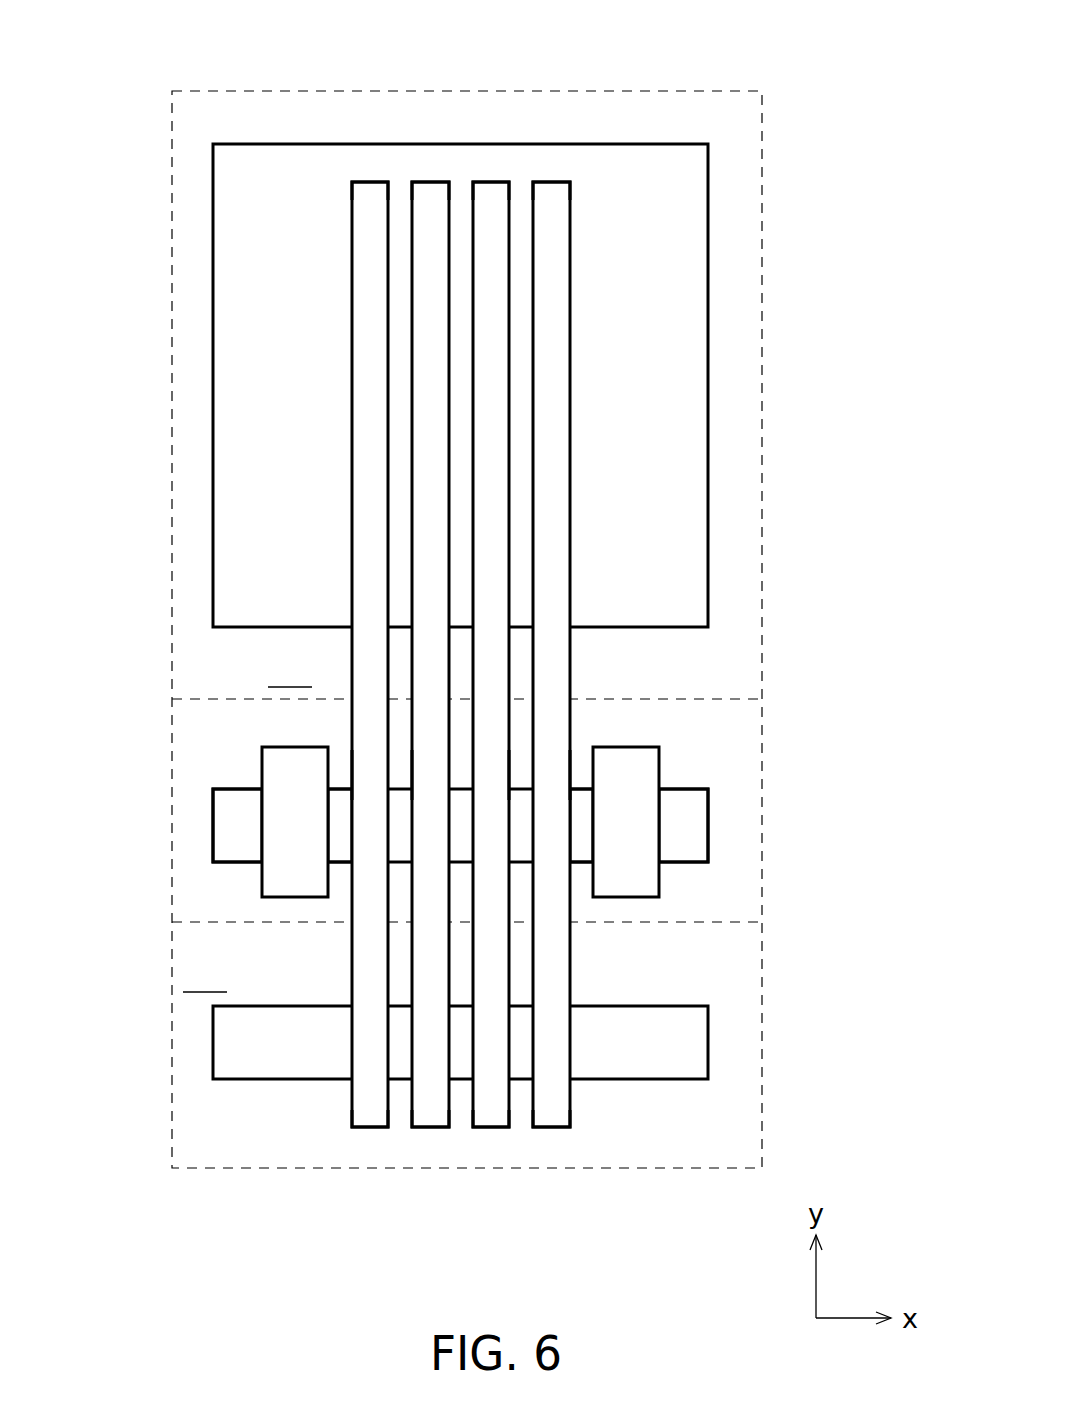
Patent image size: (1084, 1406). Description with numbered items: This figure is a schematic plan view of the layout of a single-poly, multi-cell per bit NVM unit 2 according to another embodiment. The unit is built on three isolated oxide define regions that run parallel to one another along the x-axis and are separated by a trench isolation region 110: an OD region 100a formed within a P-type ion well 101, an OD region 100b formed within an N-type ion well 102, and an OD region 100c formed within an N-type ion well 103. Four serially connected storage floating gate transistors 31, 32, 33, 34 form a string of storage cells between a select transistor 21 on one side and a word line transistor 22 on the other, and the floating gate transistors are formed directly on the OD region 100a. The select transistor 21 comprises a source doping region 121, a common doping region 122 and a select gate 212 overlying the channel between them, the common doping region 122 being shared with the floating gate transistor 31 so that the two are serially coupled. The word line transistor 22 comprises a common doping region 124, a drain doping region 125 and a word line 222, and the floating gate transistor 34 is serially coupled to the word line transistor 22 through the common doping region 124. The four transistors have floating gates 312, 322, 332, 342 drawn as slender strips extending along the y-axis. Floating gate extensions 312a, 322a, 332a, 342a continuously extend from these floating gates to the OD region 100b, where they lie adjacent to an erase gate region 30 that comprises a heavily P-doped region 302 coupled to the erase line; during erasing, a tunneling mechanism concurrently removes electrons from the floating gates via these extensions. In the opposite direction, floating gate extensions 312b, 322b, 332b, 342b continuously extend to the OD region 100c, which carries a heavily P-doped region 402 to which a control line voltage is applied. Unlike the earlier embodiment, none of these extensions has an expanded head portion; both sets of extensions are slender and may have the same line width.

The single-poly, multi-cell per bit NVM unit 2 is at (798, 86).
The ion well 103 is at (763, 148).
The ion well 101 is at (762, 735).
The ion well 102 is at (763, 1008).
The trench isolation region 110 is at (247, 825).
The heavily doped region 402 is at (481, 385).
The oxide define region 100c is at (708, 580).
The oxide define region 100a is at (535, 868).
The oxide define region 100b is at (682, 1095).
The source doping region 121 is at (232, 862).
The common doping region 122 is at (340, 862).
The common doping region 124 is at (583, 862).
The drain doping region 125 is at (683, 862).
The heavily doped region 302 is at (542, 1111).
The erase gate region 30 is at (542, 1121).
The floating gate 312 is at (349, 627).
The floating gate extension 312a is at (372, 1115).
The floating gate extension 312b is at (373, 193).
The floating gate transistor 31 is at (345, 765).
The floating gate 322 is at (378, 627).
The floating gate extension 322a is at (430, 1115).
The floating gate extension 322b is at (434, 193).
The floating gate transistor 32 is at (405, 766).
The floating gate 332 is at (540, 627).
The floating gate extension 332a is at (496, 1115).
The floating gate extension 332b is at (494, 193).
The floating gate transistor 33 is at (516, 766).
The floating gate 342 is at (571, 627).
The floating gate extension 342a is at (549, 1115).
The floating gate extension 342b is at (554, 193).
The floating gate transistor 34 is at (577, 765).
The select transistor 21 is at (206, 816).
The select gate 212 is at (285, 890).
The word line transistor 22 is at (716, 782).
The word line 222 is at (650, 772).